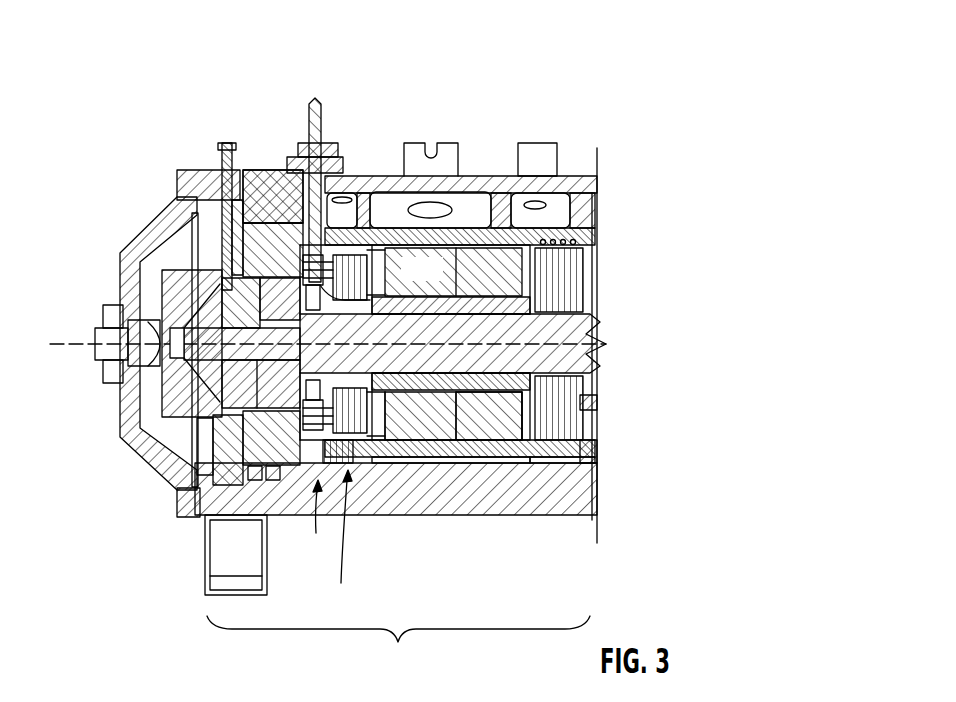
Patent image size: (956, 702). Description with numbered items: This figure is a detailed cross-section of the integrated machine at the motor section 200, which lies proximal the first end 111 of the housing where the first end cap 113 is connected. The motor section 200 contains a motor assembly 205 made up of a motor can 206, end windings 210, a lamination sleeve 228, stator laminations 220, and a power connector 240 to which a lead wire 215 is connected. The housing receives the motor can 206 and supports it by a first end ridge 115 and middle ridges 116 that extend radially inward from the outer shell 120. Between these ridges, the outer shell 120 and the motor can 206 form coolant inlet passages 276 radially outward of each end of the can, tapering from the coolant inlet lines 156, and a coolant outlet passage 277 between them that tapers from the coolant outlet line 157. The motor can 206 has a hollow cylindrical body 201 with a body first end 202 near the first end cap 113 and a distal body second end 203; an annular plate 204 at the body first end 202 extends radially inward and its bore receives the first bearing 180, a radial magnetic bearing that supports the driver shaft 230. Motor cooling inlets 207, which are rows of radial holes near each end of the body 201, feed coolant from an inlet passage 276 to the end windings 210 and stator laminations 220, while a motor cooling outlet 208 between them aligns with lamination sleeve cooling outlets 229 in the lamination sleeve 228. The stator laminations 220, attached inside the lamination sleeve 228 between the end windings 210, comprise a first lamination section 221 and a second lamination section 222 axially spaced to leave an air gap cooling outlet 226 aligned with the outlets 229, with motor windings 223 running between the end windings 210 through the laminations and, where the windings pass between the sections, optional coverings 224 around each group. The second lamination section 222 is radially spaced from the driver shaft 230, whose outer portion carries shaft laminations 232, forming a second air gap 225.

The first end 111 is at (203, 170).
The first end cap 113 is at (128, 270).
The first end ridge 115 is at (278, 222).
The middle ridges 116 is at (367, 198).
The outer shell 120 is at (347, 182).
The coolant inlet lines 156 is at (327, 158).
The coolant outlet line 157 is at (448, 188).
The first bearing 180 is at (240, 385).
The motor section 200 is at (398, 646).
The body 201 is at (453, 272).
The body first end 202 is at (212, 173).
The body second end 203 is at (595, 228).
The annular plate 204 is at (182, 184).
The motor assembly 205 is at (208, 573).
The motor can 206 is at (595, 473).
The motor cooling inlets 207 is at (594, 455).
The motor cooling outlet 208 is at (447, 470).
The end windings 210 is at (590, 403).
The lead wire 215 is at (270, 275).
The stator laminations 220 is at (318, 522).
The first lamination section 221 is at (340, 542).
The second lamination section 222 is at (546, 470).
The motor windings 223 is at (490, 418).
The winding end turns 224 is at (358, 420).
The second air gap 225 is at (598, 344).
The air gap cooling outlet 226 is at (405, 432).
The lamination sleeve 228 is at (480, 458).
The lamination sleeve cooling outlets 229 is at (428, 414).
The driver shaft 230 is at (588, 292).
The shaft laminations 232 is at (443, 374).
The power connector 240 is at (312, 100).
The coolant inlet passages 276 is at (306, 157).
The coolant outlet passage 277 is at (436, 149).